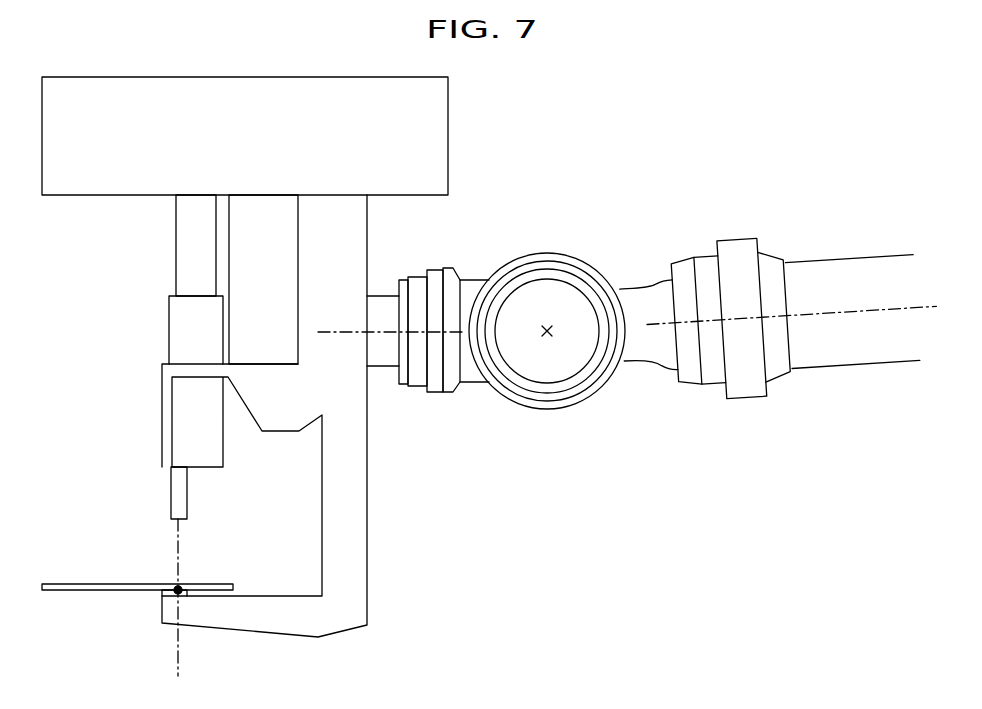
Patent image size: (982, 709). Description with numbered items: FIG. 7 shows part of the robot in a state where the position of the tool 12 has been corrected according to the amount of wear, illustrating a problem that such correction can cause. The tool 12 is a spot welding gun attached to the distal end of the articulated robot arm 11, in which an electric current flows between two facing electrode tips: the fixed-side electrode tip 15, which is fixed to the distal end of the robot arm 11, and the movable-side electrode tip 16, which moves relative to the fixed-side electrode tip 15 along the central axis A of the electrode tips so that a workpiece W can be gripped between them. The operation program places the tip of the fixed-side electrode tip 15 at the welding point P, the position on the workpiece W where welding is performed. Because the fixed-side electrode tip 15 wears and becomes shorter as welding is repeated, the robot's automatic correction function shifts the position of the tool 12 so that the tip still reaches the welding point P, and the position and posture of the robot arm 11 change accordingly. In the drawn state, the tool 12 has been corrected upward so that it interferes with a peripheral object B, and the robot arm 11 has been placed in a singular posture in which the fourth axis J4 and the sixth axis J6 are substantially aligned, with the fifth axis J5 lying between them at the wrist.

The peripheral object B is at (448, 130).
The robot arm 11 is at (640, 285).
The tool 12 is at (153, 280).
The fixed-side electrode tip 15 is at (165, 592).
The movable-side electrode tip 16 is at (188, 492).
The workpiece W is at (60, 584).
The welding point P is at (180, 588).
The central axis A is at (177, 612).
The fourth axis J4 is at (862, 312).
The fifth axis J5 is at (547, 331).
The sixth axis J6 is at (383, 330).